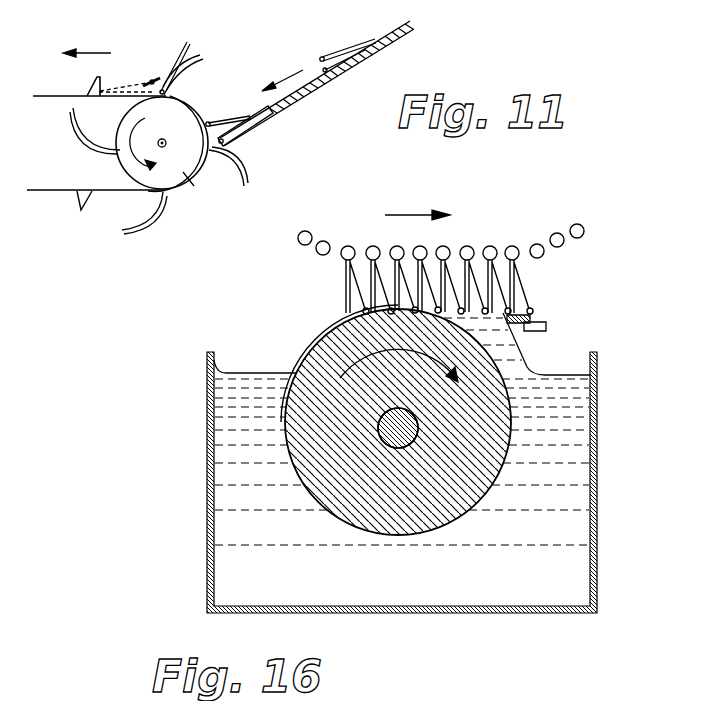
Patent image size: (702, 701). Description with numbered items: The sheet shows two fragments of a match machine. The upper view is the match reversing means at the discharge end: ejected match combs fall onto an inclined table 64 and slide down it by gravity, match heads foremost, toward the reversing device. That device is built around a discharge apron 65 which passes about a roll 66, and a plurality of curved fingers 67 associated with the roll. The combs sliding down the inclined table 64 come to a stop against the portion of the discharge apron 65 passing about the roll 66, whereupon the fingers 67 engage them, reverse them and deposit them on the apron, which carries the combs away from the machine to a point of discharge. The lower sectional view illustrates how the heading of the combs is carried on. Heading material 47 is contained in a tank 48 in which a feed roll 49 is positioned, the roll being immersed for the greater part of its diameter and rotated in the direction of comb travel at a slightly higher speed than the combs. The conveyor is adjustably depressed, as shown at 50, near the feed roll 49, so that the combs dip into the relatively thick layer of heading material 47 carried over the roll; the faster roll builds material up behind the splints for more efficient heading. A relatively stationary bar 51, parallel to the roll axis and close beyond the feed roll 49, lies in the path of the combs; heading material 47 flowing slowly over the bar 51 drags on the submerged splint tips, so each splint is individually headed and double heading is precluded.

In FIG. 11, the inclined table 64 is at (393, 42).
In FIG. 11, the discharge apron 65 is at (70, 78).
In FIG. 11, the roll 66 is at (187, 182).
In FIG. 11, the curved fingers 67 is at (248, 168).
In FIG. 16, the heading material 47 is at (548, 378).
In FIG. 16, the tank 48 is at (582, 497).
In FIG. 16, the feed roll 49 is at (412, 527).
In FIG. 16, the adjustably depressed conveyor portion 50 is at (468, 251).
In FIG. 16, the stationary bar 51 is at (504, 319).